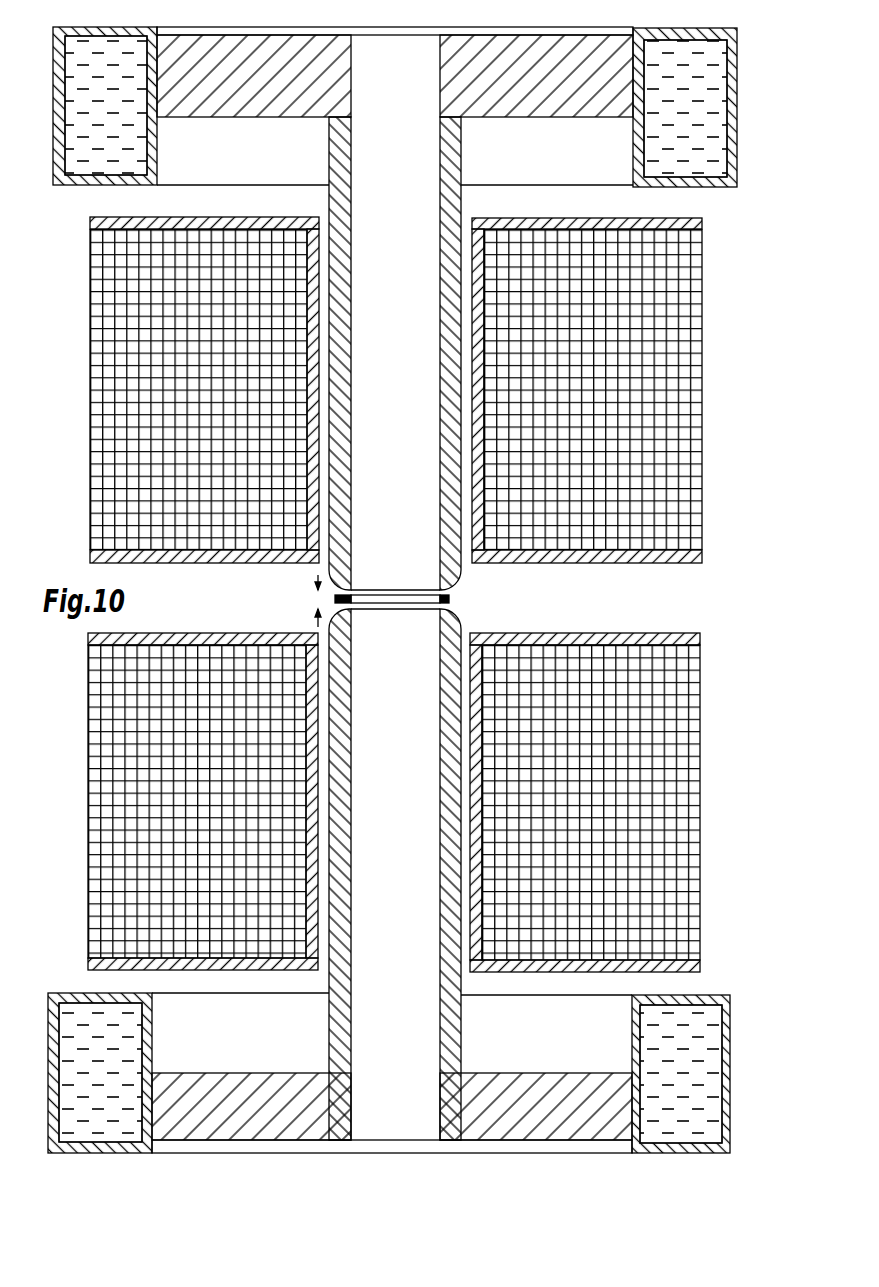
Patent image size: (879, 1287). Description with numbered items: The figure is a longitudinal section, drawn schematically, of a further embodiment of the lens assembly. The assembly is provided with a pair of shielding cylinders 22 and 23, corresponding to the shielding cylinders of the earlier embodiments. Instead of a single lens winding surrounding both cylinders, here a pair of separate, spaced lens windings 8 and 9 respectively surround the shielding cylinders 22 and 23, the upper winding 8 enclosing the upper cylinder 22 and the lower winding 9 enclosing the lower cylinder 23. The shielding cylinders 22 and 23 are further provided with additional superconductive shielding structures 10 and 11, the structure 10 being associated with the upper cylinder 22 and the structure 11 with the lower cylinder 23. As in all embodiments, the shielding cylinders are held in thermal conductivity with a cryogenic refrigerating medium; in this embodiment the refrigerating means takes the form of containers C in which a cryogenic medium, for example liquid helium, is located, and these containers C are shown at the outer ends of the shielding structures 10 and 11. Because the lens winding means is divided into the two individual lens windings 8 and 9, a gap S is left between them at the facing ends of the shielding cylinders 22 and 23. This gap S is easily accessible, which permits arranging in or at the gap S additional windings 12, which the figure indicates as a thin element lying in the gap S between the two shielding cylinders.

The lens winding 8 is at (665, 362).
The lens winding 9 is at (677, 790).
The superconductive shielding structure 10 is at (580, 85).
The superconductive shielding structure 11 is at (585, 1110).
The additional windings 12 is at (449, 600).
The shielding cylinder 22 is at (453, 188).
The shielding cylinder 23 is at (452, 1030).
The container C is at (690, 100).
The gap S is at (309, 601).